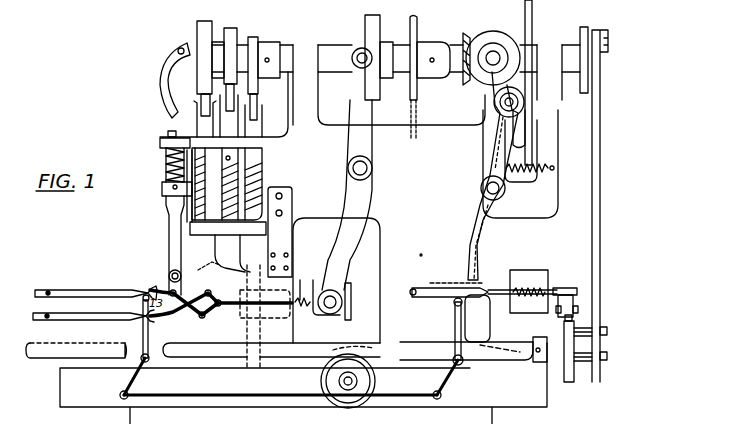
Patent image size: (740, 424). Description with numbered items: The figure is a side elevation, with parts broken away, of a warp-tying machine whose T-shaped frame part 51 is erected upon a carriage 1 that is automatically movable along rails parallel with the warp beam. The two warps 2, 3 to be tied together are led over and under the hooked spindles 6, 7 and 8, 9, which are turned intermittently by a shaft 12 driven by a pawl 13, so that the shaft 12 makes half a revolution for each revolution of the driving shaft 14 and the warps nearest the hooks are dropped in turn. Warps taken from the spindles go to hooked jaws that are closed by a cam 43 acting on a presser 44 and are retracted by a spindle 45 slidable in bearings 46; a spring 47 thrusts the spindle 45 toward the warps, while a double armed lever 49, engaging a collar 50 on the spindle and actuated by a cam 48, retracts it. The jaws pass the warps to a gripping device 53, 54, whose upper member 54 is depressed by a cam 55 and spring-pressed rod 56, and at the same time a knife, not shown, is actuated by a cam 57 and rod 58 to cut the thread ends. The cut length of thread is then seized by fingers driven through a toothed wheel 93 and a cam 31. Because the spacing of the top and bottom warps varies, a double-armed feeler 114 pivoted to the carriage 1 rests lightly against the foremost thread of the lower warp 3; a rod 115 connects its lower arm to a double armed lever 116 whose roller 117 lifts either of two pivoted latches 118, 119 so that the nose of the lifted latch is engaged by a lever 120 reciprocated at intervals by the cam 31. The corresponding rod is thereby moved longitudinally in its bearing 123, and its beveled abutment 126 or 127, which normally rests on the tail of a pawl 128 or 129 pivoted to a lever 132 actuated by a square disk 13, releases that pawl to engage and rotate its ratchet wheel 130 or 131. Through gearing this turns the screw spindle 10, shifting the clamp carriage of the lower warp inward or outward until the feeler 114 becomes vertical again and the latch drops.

The carriage 1 is at (455, 400).
The warp 2 is at (145, 290).
The warp 3 is at (136, 320).
The spindle 6 is at (63, 291).
The spindle 7 is at (42, 284).
The spindle 8 is at (64, 321).
The spindle 9 is at (42, 326).
The screw spindle 10 is at (498, 356).
The shaft 12 is at (48, 358).
The pawl 13 is at (573, 370).
The driving shaft 14 is at (333, 57).
The cam 31 is at (520, 164).
The cam 43 is at (258, 38).
The presser 44 is at (260, 266).
The spindle 45 is at (200, 318).
The bearings 46 is at (340, 316).
The spring 47 is at (302, 316).
The cam 48 is at (376, 22).
The double armed lever 49 is at (368, 153).
The collar 50 is at (352, 298).
The T-shaped frame part 51 is at (425, 248).
The gripping device member 53 is at (170, 330).
The upper member of gripping device 54 is at (168, 241).
The cam 55 is at (207, 24).
The spring-pressed rod 56 is at (197, 124).
The cam 57 is at (232, 29).
The rod 58 is at (225, 242).
The toothed wheel 93 is at (533, 27).
The double-armed feeler 114 is at (140, 356).
The rod 115 is at (230, 395).
The double armed lever 116 is at (453, 335).
The roller 117 is at (456, 303).
The latch 118 is at (486, 286).
The latch 119 is at (458, 288).
The lever 120 is at (487, 170).
The bearing 123 is at (530, 272).
The beveled abutment 126 is at (558, 288).
The beveled abutment 127 is at (574, 296).
The pawl 128 is at (556, 309).
The pawl 129 is at (580, 309).
The ratchet wheel 130 is at (574, 375).
The ratchet wheel 131 is at (606, 375).
The lever 132 is at (565, 317).